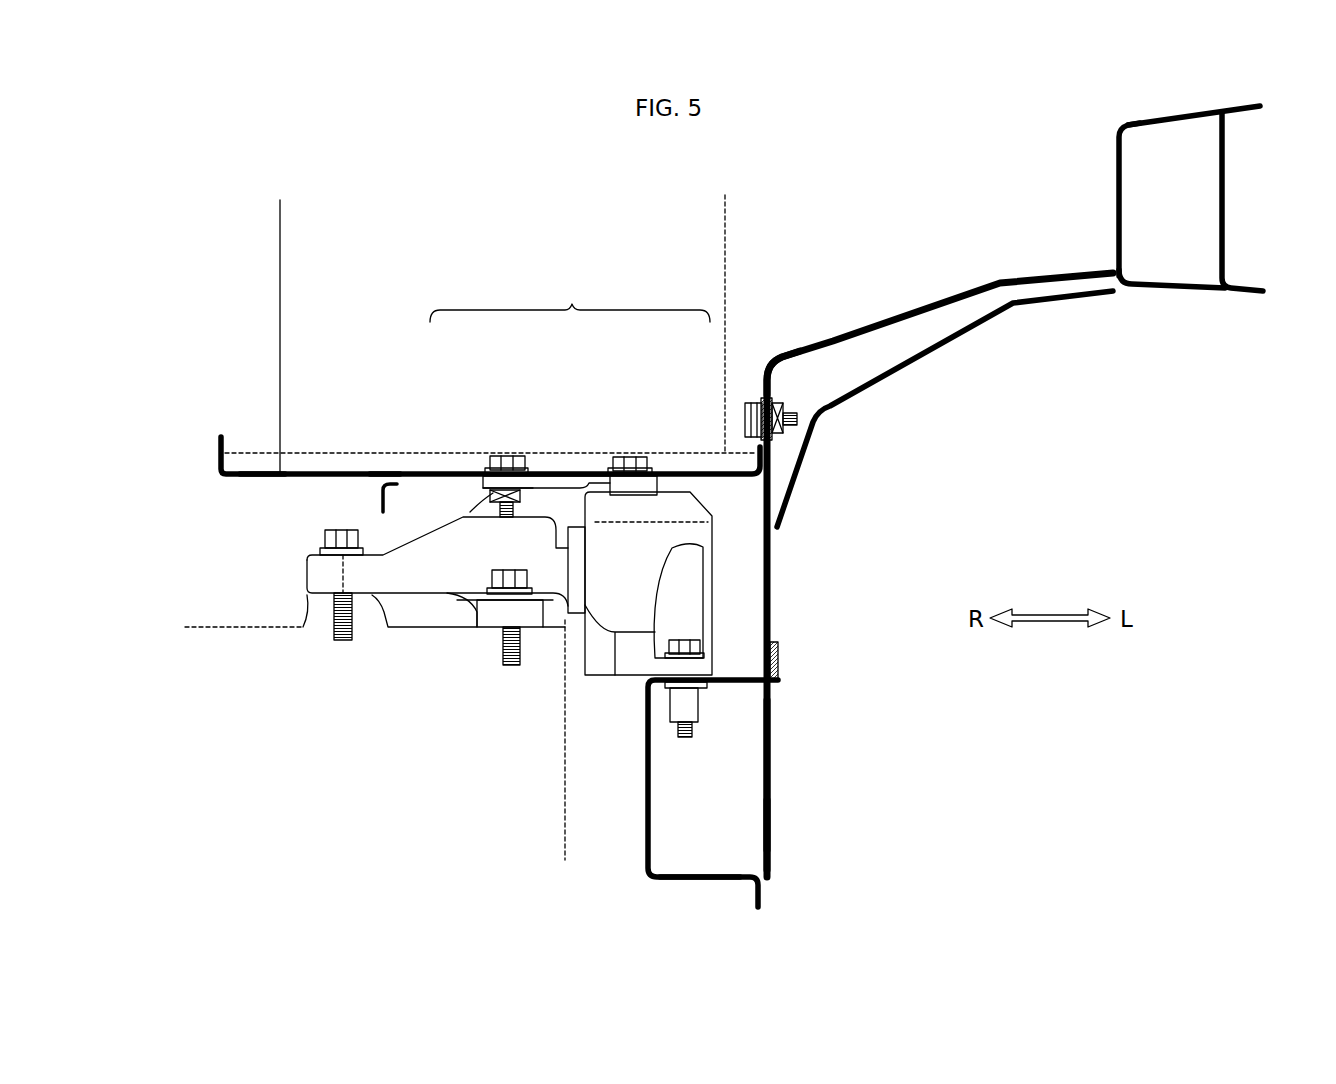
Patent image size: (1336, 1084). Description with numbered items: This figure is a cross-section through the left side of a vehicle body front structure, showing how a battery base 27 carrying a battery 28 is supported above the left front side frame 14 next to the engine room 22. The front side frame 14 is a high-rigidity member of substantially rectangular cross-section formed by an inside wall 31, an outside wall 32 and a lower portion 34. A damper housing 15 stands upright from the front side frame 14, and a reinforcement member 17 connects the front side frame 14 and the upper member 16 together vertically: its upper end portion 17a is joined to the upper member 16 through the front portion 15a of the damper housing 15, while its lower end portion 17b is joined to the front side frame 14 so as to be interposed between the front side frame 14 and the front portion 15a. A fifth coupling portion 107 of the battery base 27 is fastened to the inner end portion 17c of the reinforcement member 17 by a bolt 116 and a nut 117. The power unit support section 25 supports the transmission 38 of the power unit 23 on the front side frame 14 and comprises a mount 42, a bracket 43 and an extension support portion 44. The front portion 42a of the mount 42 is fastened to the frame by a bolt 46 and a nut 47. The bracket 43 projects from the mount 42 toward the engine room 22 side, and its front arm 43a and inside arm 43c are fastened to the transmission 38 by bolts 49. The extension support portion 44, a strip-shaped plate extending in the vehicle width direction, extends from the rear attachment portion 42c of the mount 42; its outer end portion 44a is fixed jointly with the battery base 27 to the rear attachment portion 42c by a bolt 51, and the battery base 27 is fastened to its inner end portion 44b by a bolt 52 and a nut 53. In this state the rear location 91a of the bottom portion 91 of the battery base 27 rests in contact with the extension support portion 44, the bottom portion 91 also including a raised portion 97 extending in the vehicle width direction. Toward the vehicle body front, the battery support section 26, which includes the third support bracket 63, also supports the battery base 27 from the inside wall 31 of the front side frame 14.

The front side frame 14 is at (782, 822).
The damper housing 15 is at (920, 355).
The front portion of damper housing 15a is at (945, 409).
The upper member 16 is at (1172, 113).
The reinforcement member 17 is at (930, 300).
The upper end portion of reinforcement member 17a is at (1113, 172).
The lower end portion of reinforcement member 17b is at (790, 678).
The inner end portion of reinforcement member 17c is at (772, 400).
The engine room 22 is at (202, 593).
The power unit 23 is at (268, 622).
The power unit support section 25 is at (570, 296).
The battery support section 26 is at (380, 487).
The battery base 27 is at (218, 445).
The battery 28 is at (280, 238).
The inside wall 31 is at (772, 660).
The outside wall 32 is at (775, 760).
The lower portion 34 is at (697, 880).
The transmission 38 is at (240, 563).
The mount 42 is at (683, 492).
The front portion of mount 42a is at (633, 668).
The rear attachment portion of mount 42c is at (610, 508).
The bracket 43 is at (432, 527).
The front arm of bracket 43a is at (497, 625).
The inside arm of bracket 43c is at (370, 600).
The extension support portion 44 is at (563, 476).
The outer end portion of extension support portion 44a is at (648, 476).
The inner end portion of extension support portion 44b is at (488, 480).
The bolt 46 is at (688, 640).
The nut 47 is at (690, 705).
The bolt 49 is at (340, 530).
The bolt 51 is at (628, 458).
The bolt 52 is at (505, 458).
The nut 53 is at (484, 527).
The third support bracket 63 is at (348, 467).
The bottom portion of battery base 91 is at (385, 478).
The rear location of bottom portion 91a is at (393, 425).
The raised portion 97 is at (262, 452).
The fifth coupling portion 107 is at (766, 398).
The bolt 116 is at (750, 403).
The nut 117 is at (784, 412).